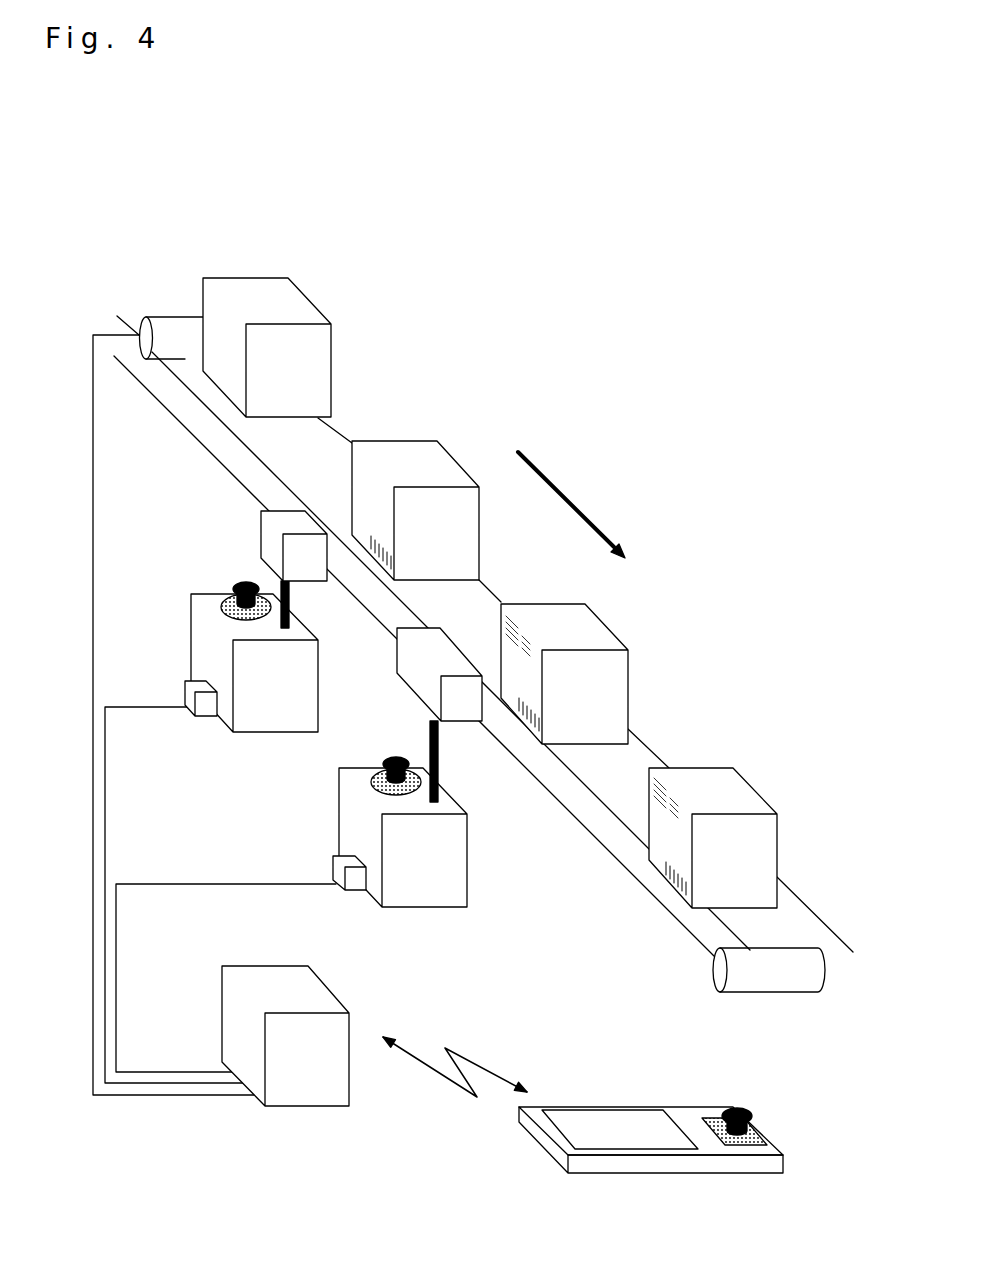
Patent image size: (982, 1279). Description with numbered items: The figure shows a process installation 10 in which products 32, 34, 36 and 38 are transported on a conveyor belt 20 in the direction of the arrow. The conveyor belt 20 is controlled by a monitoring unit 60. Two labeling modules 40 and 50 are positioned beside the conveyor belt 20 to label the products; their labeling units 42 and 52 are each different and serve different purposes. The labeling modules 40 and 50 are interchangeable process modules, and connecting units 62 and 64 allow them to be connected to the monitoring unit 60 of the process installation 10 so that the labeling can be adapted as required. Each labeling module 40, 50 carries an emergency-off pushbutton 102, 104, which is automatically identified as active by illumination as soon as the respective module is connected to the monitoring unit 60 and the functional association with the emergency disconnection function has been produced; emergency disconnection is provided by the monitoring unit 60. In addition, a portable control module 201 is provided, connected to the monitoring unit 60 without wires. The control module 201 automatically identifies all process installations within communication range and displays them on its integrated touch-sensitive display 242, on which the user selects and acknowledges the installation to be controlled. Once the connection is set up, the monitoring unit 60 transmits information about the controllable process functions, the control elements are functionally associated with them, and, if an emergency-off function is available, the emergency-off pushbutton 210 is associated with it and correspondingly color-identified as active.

The process installation 10 is at (250, 132).
The conveyor belt 20 is at (350, 428).
The product 32 is at (298, 288).
The product 34 is at (455, 450).
The product 36 is at (635, 628).
The product 38 is at (703, 765).
The labeling module 40 is at (243, 734).
The labeling unit 42 is at (261, 540).
The labeling module 50 is at (403, 909).
The labeling unit 52 is at (457, 722).
The monitoring unit 60 is at (318, 1107).
The connecting unit 62 is at (202, 718).
The connecting unit 64 is at (352, 890).
The emergency-off pushbutton 102 is at (240, 585).
The emergency-off pushbutton 104 is at (396, 757).
The portable control module 201 is at (665, 1090).
The touch-sensitive display 242 is at (627, 1110).
The emergency-off pushbutton 210 is at (740, 1107).